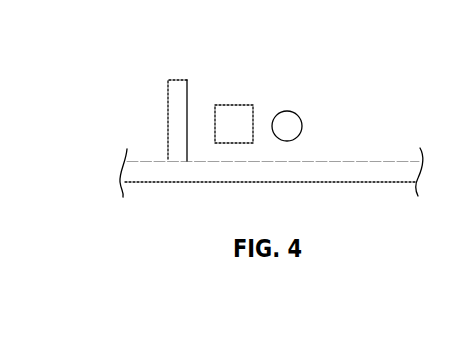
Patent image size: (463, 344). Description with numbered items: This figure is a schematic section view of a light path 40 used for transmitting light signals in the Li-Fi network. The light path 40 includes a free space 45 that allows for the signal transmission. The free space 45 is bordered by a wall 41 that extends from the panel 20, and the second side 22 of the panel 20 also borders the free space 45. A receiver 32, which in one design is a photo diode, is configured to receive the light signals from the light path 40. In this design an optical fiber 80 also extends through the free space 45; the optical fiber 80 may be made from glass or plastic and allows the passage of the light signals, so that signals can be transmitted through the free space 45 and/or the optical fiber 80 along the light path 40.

The panel 20 is at (320, 173).
The second side 22 is at (359, 162).
The light path 40 is at (223, 82).
The wall 41 is at (177, 129).
The receiver 32 is at (234, 127).
The optical fiber 80 is at (285, 122).
The free space 45 is at (200, 132).